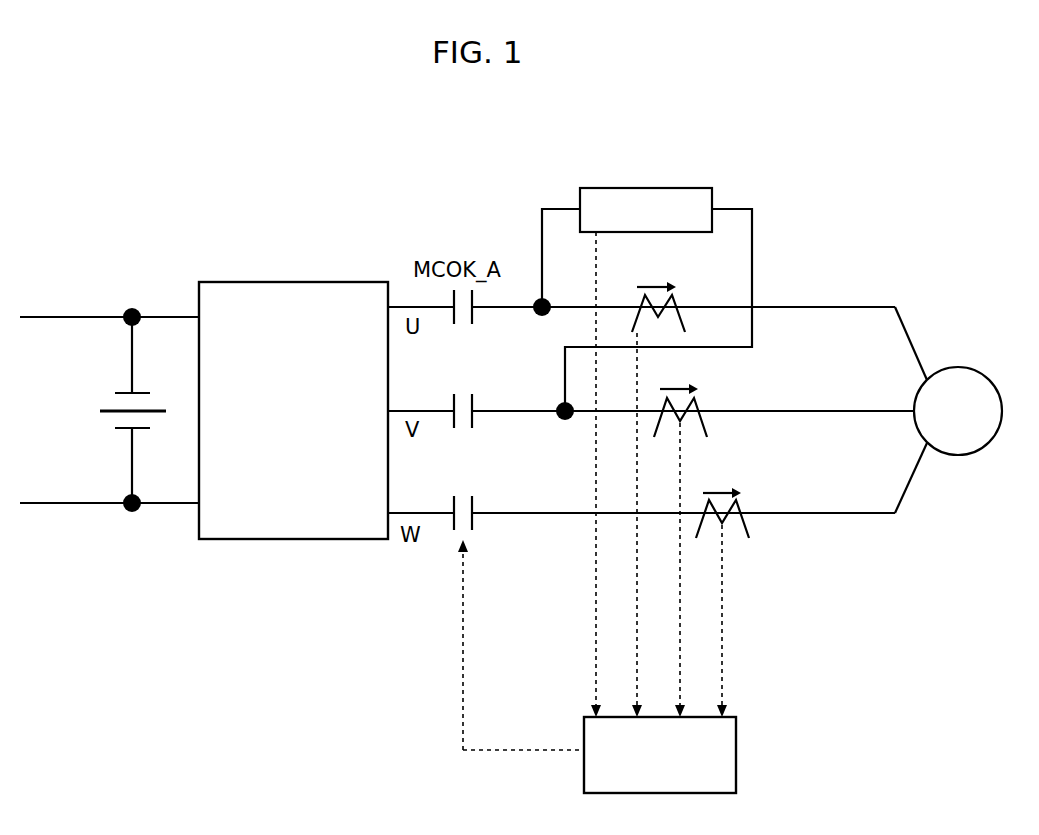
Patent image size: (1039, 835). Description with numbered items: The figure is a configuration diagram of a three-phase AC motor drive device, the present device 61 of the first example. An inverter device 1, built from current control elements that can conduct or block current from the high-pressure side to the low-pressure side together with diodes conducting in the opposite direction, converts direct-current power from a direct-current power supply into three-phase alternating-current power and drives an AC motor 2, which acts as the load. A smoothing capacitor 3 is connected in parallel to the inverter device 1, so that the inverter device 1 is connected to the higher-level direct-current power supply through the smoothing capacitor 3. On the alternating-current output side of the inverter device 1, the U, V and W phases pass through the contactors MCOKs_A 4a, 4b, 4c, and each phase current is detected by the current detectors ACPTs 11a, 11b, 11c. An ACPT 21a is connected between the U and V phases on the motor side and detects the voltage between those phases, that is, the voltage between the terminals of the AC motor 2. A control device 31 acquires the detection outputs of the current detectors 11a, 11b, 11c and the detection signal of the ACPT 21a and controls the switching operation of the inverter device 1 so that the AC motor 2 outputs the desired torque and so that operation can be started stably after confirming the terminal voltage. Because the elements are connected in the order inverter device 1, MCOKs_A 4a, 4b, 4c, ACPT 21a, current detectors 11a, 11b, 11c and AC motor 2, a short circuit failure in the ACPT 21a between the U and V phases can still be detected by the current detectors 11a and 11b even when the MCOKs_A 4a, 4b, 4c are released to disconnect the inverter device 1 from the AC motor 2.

The present device 61 is at (488, 151).
The inverter device 1 is at (300, 424).
The AC motor 2 is at (965, 422).
The smoothing capacitor 3 is at (85, 413).
The MCOK_A 4a is at (473, 324).
The MCOK_A 4b is at (473, 428).
The MCOK_A 4c is at (473, 530).
The ACPT (current detector) 11a is at (681, 299).
The ACPT (current detector) 11b is at (705, 407).
The ACPT (current detector) 11c is at (747, 497).
The ACPT 21a is at (694, 221).
The control device 31 is at (673, 768).